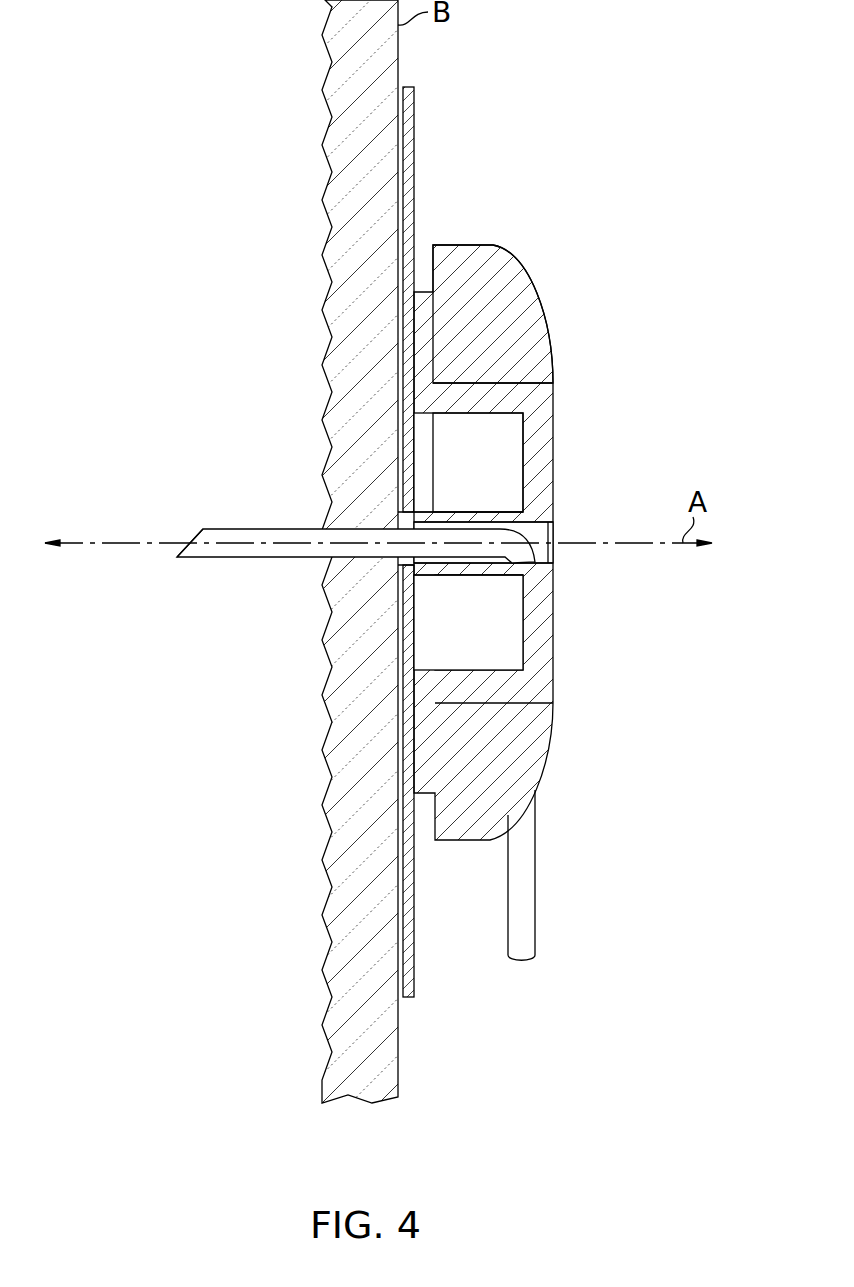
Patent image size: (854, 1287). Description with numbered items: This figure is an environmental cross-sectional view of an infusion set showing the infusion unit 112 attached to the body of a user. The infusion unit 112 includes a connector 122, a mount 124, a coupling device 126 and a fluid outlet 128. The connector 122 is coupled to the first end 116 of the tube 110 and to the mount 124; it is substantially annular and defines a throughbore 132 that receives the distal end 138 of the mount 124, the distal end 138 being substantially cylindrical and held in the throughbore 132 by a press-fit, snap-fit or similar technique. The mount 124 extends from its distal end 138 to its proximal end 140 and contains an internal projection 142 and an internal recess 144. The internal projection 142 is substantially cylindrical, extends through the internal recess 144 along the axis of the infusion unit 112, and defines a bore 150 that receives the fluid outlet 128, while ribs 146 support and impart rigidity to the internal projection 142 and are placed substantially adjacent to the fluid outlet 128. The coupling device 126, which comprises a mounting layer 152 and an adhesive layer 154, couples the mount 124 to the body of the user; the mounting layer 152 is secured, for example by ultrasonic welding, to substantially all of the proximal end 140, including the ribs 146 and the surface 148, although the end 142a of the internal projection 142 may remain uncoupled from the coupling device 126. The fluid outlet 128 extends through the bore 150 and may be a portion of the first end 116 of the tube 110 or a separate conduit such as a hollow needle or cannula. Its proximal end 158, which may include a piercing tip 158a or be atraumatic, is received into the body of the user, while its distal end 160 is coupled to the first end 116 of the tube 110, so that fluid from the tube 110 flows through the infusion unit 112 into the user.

The tube 110 is at (562, 938).
The infusion unit 112 is at (626, 107).
The first end of the tube 116 is at (536, 860).
The connector 122 is at (575, 264).
The mount 124 is at (576, 399).
The coupling device 126 is at (414, 1027).
The fluid outlet 128 is at (236, 591).
The throughbore 132 is at (475, 390).
The distal end of the mount 138 is at (572, 631).
The proximal end of the mount 140 is at (425, 838).
The internal projection 142 is at (494, 502).
The end of the internal projection 142a is at (413, 518).
The internal recess 144 is at (467, 670).
The ribs 146 is at (427, 443).
The surface of the proximal end 148 is at (432, 702).
The bore 150 is at (443, 533).
The mounting layer 152 is at (414, 972).
The adhesive layer 154 is at (400, 1000).
The proximal end of the fluid outlet 158 is at (267, 570).
The piercing tip 158a is at (196, 529).
The distal end of the fluid outlet 160 is at (533, 535).